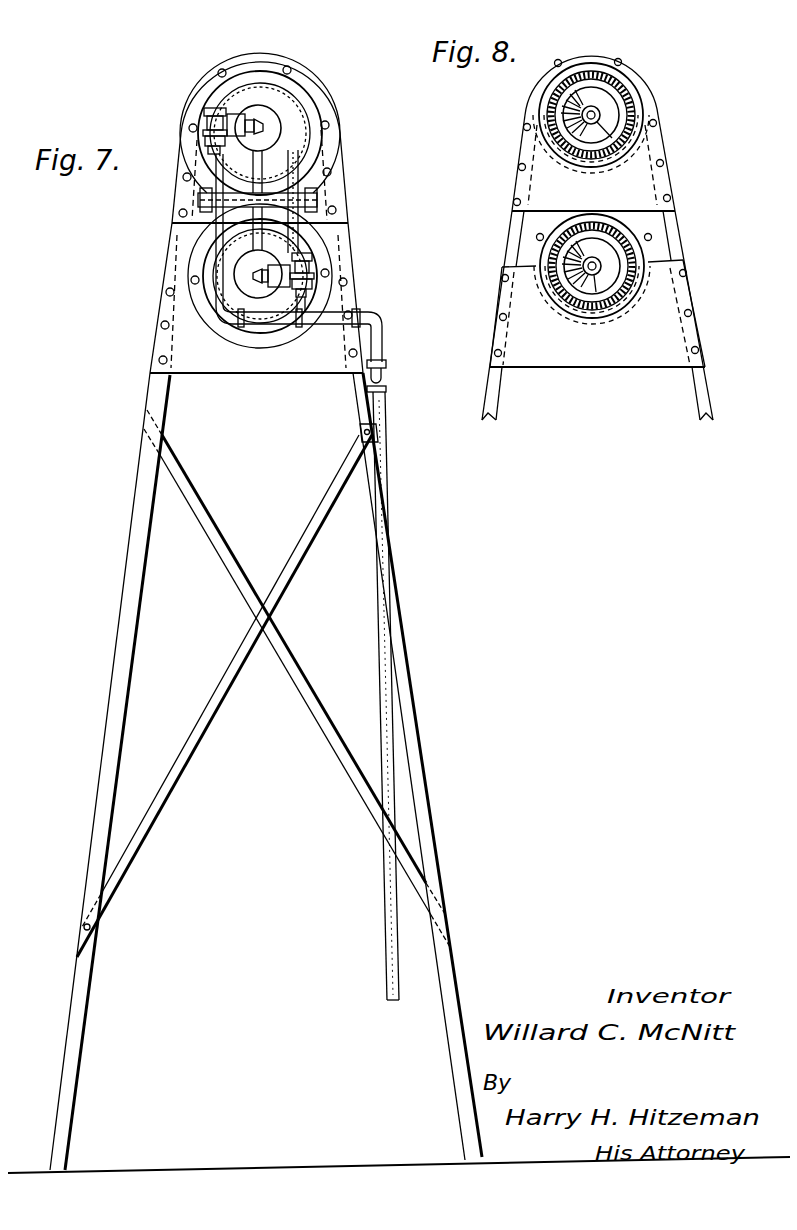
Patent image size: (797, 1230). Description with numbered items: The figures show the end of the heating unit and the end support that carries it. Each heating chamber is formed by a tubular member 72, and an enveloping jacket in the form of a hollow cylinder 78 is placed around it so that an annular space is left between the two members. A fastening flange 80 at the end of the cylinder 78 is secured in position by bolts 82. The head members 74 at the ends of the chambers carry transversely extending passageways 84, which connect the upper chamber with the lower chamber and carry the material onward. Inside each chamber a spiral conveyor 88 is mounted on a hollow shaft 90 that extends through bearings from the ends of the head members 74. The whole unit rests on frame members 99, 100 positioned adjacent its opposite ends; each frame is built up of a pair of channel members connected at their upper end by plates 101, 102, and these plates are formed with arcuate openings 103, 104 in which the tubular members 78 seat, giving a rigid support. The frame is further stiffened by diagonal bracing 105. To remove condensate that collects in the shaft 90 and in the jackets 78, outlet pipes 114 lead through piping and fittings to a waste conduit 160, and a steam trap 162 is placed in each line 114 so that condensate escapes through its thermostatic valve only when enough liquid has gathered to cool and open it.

In FIG. 8, the tubular member 72 is at (615, 100).
In FIG. 7, the head member 74 is at (237, 100).
In FIG. 8, the hollow cylinder 78 is at (595, 73).
In FIG. 7, the fastening flange 80 is at (248, 62).
In FIG. 8, the fastening flange 80 is at (633, 73).
In FIG. 7, the bolts 82 is at (222, 73).
In FIG. 7, the transversely extending passageway 84 is at (320, 167).
In FIG. 8, the spiral conveyor 88 is at (558, 110).
In FIG. 8, the hollow shaft 90 is at (600, 115).
In FIG. 8, the frame member 99 is at (510, 235).
In FIG. 7, the frame member 100 is at (127, 592).
In FIG. 7, the plate 101 is at (180, 200).
In FIG. 8, the plate 101 is at (527, 153).
In FIG. 7, the plate 102 is at (163, 318).
In FIG. 8, the plate 102 is at (522, 300).
In FIG. 8, the arcuate opening 103 is at (573, 160).
In FIG. 8, the arcuate opening 104 is at (573, 313).
In FIG. 7, the diagonal bracing 105 is at (233, 662).
In FIG. 7, the outlet pipe 114 is at (263, 127).
In FIG. 7, the waste conduit 160 is at (382, 528).
In FIG. 7, the steam trap 162 is at (207, 120).